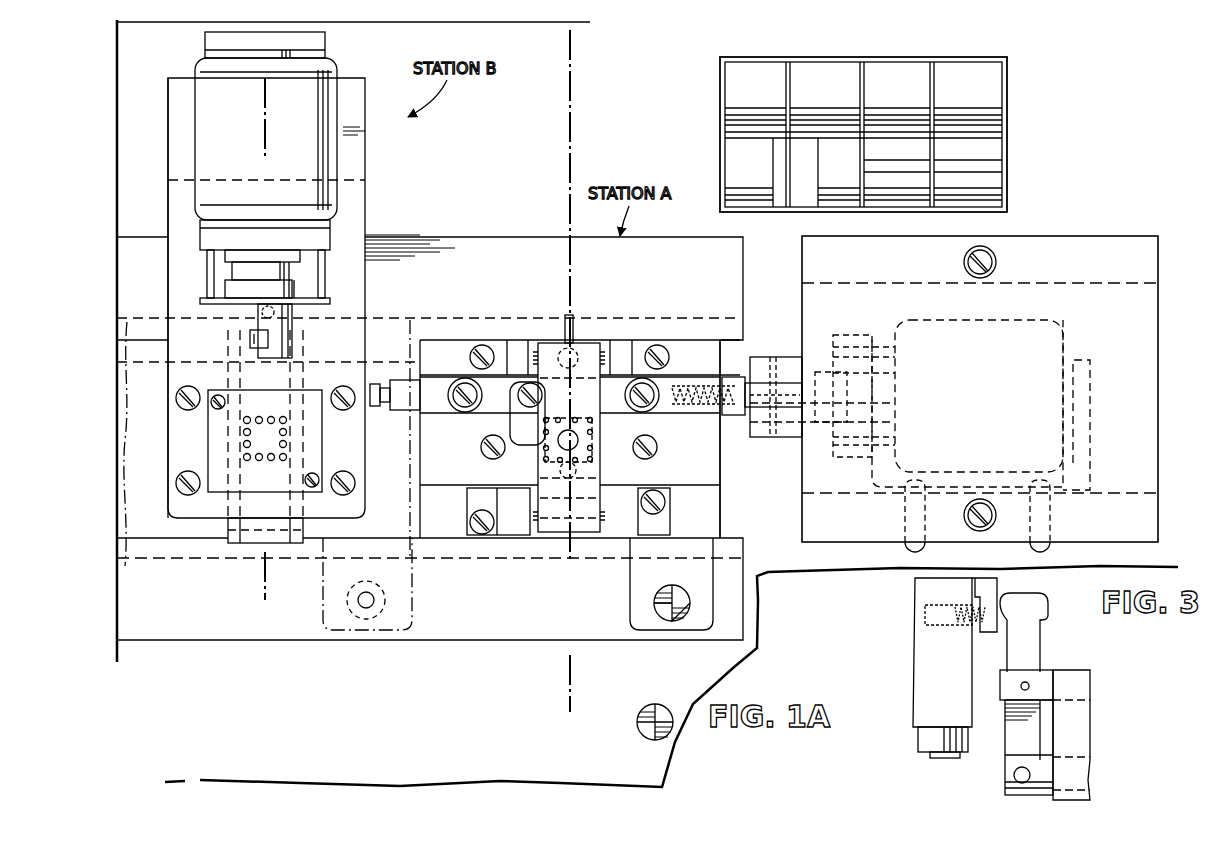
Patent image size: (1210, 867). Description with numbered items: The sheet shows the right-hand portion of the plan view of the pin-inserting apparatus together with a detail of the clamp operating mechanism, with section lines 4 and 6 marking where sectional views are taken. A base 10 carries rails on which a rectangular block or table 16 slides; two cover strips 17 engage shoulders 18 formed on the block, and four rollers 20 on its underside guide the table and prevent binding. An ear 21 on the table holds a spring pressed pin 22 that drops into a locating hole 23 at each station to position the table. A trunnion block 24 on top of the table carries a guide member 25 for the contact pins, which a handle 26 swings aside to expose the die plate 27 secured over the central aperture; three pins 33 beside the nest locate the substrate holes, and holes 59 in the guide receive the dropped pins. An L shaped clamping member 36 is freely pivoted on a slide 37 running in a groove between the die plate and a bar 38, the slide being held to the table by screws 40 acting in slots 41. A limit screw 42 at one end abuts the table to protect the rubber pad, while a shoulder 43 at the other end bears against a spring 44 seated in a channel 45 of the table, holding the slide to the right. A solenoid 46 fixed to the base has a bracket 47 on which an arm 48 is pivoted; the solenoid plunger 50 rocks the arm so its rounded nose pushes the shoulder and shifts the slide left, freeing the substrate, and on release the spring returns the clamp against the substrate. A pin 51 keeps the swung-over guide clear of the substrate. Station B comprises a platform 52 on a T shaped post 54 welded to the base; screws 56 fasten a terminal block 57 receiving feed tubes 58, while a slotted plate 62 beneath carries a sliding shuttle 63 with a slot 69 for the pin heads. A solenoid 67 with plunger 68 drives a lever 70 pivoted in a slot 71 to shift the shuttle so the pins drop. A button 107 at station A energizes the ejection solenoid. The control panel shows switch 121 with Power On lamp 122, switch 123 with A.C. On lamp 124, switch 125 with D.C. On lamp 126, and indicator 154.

In FIG. 1A, the section line 4- 4 is at (574, 60).
In FIG. 1A, the section line 6- 6 is at (270, 88).
In FIG. 1A, the base 10 is at (352, 703).
In FIG. 3, the block or table 16 is at (926, 687).
In FIG. 1A, the cover strips 17 is at (472, 237).
In FIG. 1A, the shoulders 18 is at (663, 322).
In FIG. 3, the rollers 20 is at (925, 742).
In FIG. 1A, the ear 21 is at (630, 603).
In FIG. 1A, the spring pressed pin 22 is at (672, 595).
In FIG. 1A, the locating hole 23 is at (369, 598).
In FIG. 1A, the trunnion block 24 is at (508, 545).
In FIG. 1A, the guide member 25 is at (548, 340).
In FIG. 1A, the handle 26 is at (573, 332).
In FIG. 1A, the die plate 27 is at (712, 450).
In FIG. 1A, the locating pins 33 is at (594, 462).
In FIG. 1A, the L shaped clamping member 36 is at (523, 446).
In FIG. 1A, the slide 37 is at (445, 380).
In FIG. 3, the slide 37 is at (994, 591).
In FIG. 1A, the bar 38 is at (443, 340).
In FIG. 1A, the screws 40 is at (460, 409).
In FIG. 1A, the slots 41 is at (455, 406).
In FIG. 1A, the limit screw 42 is at (378, 384).
In FIG. 1A, the shoulder 43 is at (737, 415).
In FIG. 3, the shoulder 43 is at (985, 634).
In FIG. 1A, the spring 44 is at (690, 388).
In FIG. 3, the spring 44 is at (952, 626).
In FIG. 3, the channel 45 is at (930, 606).
In FIG. 1A, the solenoid 46 is at (1062, 340).
In FIG. 3, the solenoid 46 is at (1086, 690).
In FIG. 1A, the bracket 47 is at (790, 438).
In FIG. 3, the bracket 47 is at (1025, 680).
In FIG. 1A, the arm 48 is at (762, 383).
In FIG. 3, the arm 48 is at (1042, 616).
In FIG. 3, the plunger 50 is at (1005, 768).
In FIG. 1A, the pin 51 is at (582, 350).
In FIG. 1A, the platform 52 is at (352, 222).
In FIG. 1A, the T shaped post 54 is at (350, 164).
In FIG. 1A, the screws 56 is at (218, 396).
In FIG. 1A, the terminal block 57 is at (310, 402).
In FIG. 1A, the tubes 58 is at (272, 418).
In FIG. 1A, the holes 59 is at (560, 468).
In FIG. 1A, the slotted plate 62 is at (350, 450).
In FIG. 1A, the shuttle 63 is at (300, 532).
In FIG. 1A, the solenoid 67 is at (235, 132).
In FIG. 1A, the plunger 68 is at (292, 330).
In FIG. 1A, the slot 69 is at (253, 542).
In FIG. 1A, the lever 70 is at (262, 328).
In FIG. 1A, the slot 71 is at (270, 312).
In FIG. 1A, the button 107 is at (643, 729).
In FIG. 1A, the switch 121 is at (728, 147).
In FIG. 1A, the Power On lamp 122 is at (753, 68).
In FIG. 1A, the switch 123 is at (891, 192).
In FIG. 1A, the A.C. On lamp 124 is at (896, 68).
In FIG. 1A, the switch 125 is at (970, 192).
In FIG. 1A, the D.C. On lamp 126 is at (967, 68).
In FIG. 1A, the module cell 154 is at (827, 68).